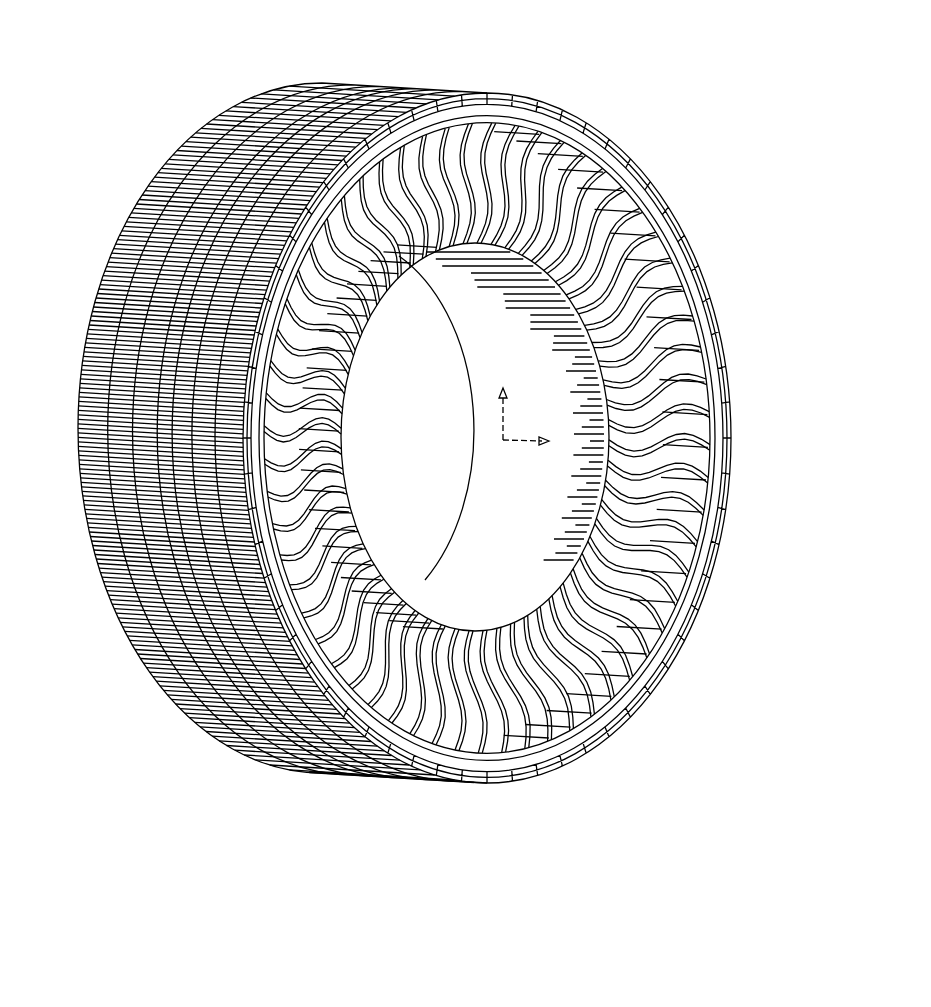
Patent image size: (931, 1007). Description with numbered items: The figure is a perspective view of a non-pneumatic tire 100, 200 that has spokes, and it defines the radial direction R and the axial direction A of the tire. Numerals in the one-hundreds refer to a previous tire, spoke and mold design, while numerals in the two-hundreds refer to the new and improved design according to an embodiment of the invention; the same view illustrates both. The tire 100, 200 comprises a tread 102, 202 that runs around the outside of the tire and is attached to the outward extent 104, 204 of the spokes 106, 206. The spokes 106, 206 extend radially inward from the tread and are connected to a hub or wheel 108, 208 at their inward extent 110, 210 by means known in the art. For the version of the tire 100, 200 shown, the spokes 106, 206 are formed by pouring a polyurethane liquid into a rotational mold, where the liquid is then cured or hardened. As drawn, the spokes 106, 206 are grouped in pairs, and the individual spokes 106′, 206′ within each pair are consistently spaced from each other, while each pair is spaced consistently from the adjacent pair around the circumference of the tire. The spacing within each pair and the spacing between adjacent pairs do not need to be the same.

The tire 100 is at (436, 489).
The tire 200 is at (176, 50).
The tread 102 is at (282, 458).
The tread 202 is at (255, 762).
The outward extent of the spokes 104 is at (487, 467).
The outward extent of the spokes 204 is at (472, 770).
The individual spoke 106′ is at (542, 438).
The individual spoke 206′ is at (500, 640).
The spokes 106 is at (550, 438).
The spokes 206 is at (550, 438).
The hub or wheel 108 is at (475, 437).
The hub or wheel 208 is at (487, 352).
The inward extent of the spokes 110 is at (516, 424).
The inward extent of the spokes 210 is at (607, 465).